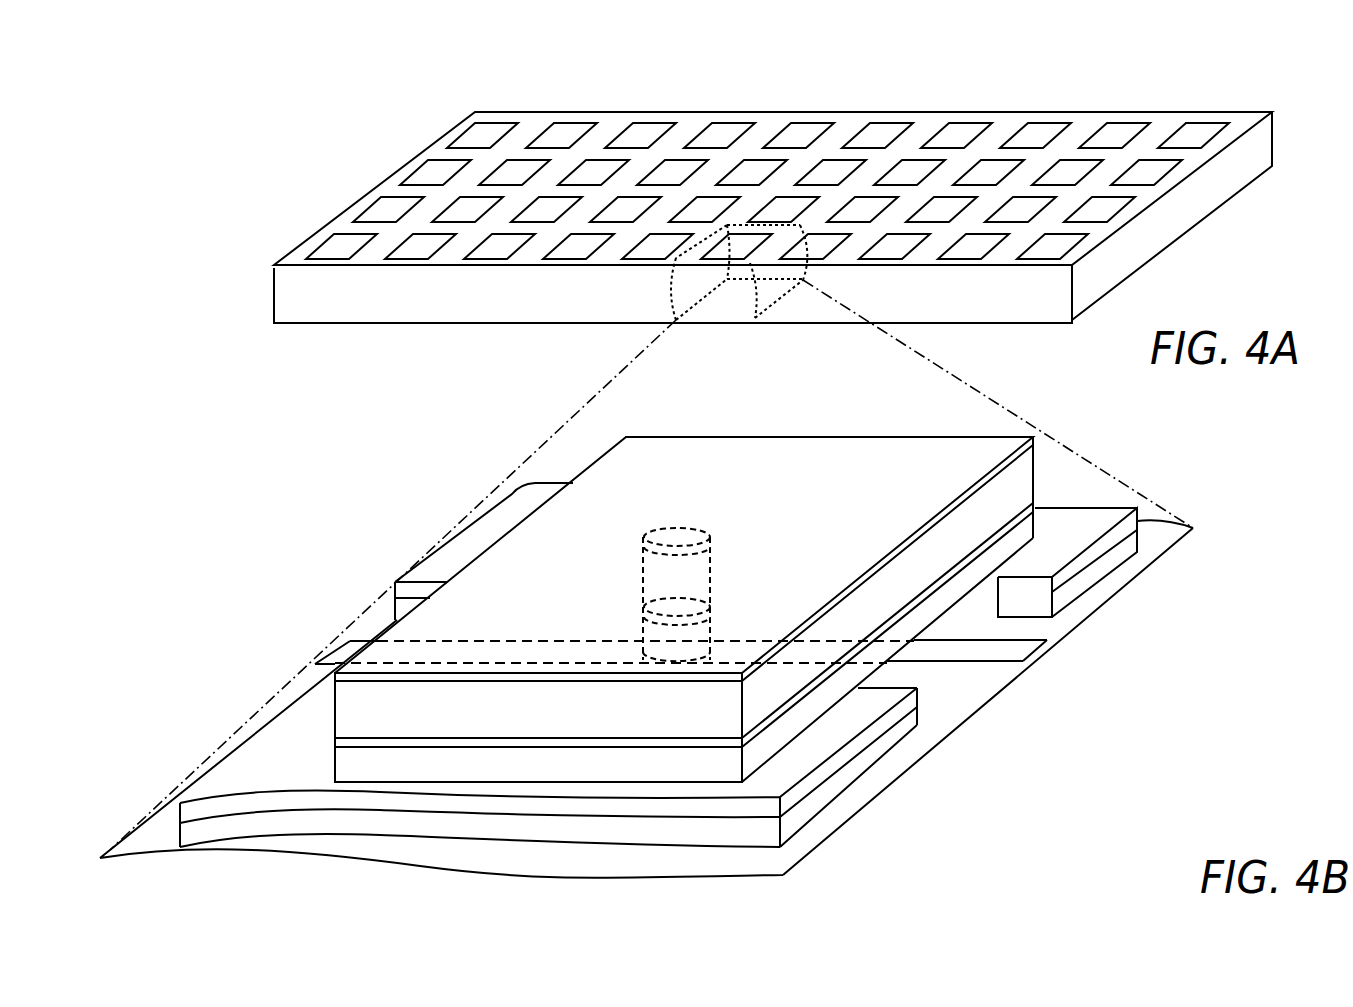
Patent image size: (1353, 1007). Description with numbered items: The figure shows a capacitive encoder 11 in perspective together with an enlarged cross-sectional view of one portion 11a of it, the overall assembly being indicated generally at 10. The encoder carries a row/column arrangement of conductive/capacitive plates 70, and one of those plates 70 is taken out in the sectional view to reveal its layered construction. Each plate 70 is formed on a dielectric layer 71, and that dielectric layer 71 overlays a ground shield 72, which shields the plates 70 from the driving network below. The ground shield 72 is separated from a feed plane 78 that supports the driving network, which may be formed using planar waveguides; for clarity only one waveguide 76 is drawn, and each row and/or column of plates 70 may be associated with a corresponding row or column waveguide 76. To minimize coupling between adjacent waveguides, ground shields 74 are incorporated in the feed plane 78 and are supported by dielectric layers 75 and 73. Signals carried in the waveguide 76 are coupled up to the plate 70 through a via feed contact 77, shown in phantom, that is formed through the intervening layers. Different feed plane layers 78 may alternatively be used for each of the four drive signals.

In FIG. 4A, the device substrate with array of elements 10 is at (708, 449).
In FIG. 4A, the capacitive encoder 11 is at (1262, 146).
In FIG. 4B, the unit cell portion of substrate 11a is at (646, 657).
In FIG. 4A, the conductive/capacitive plate 70 is at (1196, 129).
In FIG. 4B, the conductive/capacitive plate 70 is at (703, 609).
In FIG. 4B, the dielectric layer 71 is at (1036, 470).
In FIG. 4B, the ground shield 72 is at (1036, 506).
In FIG. 4B, the dielectric layer 73 is at (1036, 538).
In FIG. 4B, the ground shield 74 is at (1098, 514).
In FIG. 4B, the dielectric layer 75 is at (1138, 543).
In FIG. 4B, the waveguide 76 is at (1027, 650).
In FIG. 4B, the via feed contact 77 is at (696, 530).
In FIG. 4B, the feed plane 78 is at (1113, 588).